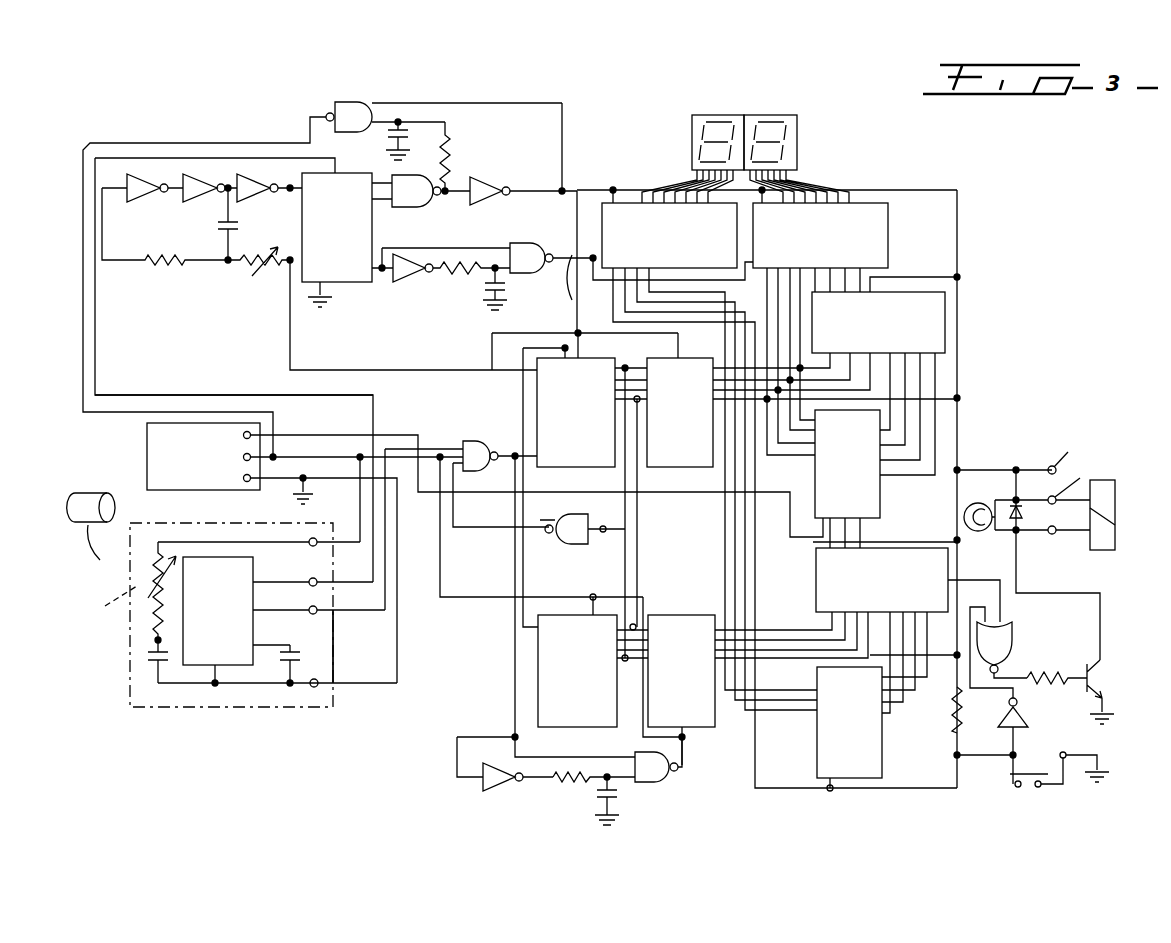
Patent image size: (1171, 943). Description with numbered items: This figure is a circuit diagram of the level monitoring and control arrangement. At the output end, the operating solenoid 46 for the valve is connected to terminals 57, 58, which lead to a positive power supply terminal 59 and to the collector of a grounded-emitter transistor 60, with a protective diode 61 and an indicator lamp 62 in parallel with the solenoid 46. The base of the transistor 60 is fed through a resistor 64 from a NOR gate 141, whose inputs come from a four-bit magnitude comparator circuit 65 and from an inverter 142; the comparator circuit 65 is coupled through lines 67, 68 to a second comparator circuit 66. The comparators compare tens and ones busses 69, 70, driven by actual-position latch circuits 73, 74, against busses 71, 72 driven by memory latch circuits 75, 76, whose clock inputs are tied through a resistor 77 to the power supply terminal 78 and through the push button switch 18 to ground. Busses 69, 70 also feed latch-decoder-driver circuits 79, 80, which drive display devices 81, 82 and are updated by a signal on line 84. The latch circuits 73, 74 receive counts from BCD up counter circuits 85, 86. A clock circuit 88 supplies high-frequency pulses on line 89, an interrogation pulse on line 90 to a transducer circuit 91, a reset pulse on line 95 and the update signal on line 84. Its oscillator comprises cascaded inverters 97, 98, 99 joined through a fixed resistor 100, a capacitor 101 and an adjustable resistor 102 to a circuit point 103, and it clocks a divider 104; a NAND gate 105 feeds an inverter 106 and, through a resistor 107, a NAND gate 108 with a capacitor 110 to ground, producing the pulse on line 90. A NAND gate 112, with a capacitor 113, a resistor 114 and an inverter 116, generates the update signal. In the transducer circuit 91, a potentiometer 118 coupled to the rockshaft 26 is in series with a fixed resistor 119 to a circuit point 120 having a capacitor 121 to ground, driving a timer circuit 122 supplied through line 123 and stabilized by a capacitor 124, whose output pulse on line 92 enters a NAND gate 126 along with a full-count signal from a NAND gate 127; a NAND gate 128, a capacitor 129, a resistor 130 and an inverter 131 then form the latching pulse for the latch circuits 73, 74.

The push button switch 18 is at (1033, 770).
The rockshaft 26 is at (85, 526).
The operating solenoid 46 is at (1112, 550).
The terminal 57 is at (1080, 484).
The terminal 58 is at (1052, 536).
The positive power supply terminal 59 is at (1063, 462).
The transistor 60 is at (1100, 676).
The protective diode 61 is at (1022, 516).
The indicator lamp 62 is at (966, 510).
The resistor 64 is at (1044, 678).
The 4-bit magnitude comparator circuit 65 is at (948, 566).
The second 4-bit magnitude comparator circuit 66 is at (945, 325).
The line 67 is at (940, 420).
The line 68 is at (930, 447).
The tens bus 69 is at (780, 635).
The ones bus 70 is at (846, 375).
The bus 71 is at (882, 655).
The bus 72 is at (908, 386).
The quad clocked D latch circuit 73 is at (705, 727).
The quad clocked D latch circuit 74 is at (692, 467).
The quad clocked D latch circuit 75 is at (882, 757).
The quad clocked D latch circuit 76 is at (882, 470).
The resistor 77 is at (960, 717).
The power supply terminal 78 is at (258, 462).
The BCD-to-7 segment latch-decoder-driver circuit 79 is at (608, 203).
The BCD-to-7 segment latch-decoder-driver circuit 80 is at (870, 203).
The display device 81 is at (692, 140).
The display device 82 is at (797, 135).
The line 84 is at (587, 284).
The four stage BCD up counter circuit 85 is at (585, 727).
The four stage BCD up counter circuit 86 is at (572, 467).
The clock circuit 88 is at (590, 113).
The line 89 is at (385, 370).
The line 90 is at (373, 415).
The transducer circuit 91 is at (343, 714).
The line 92 is at (336, 615).
The line 95 is at (470, 103).
The inverter 97 is at (143, 202).
The inverter 98 is at (197, 202).
The inverter 99 is at (258, 202).
The fixed resistor 100 is at (165, 265).
The capacitor 101 is at (210, 250).
The adjustable resistor 102 is at (276, 262).
The circuit point 103 is at (228, 265).
The divider 104 is at (355, 282).
The NAND gate 105 is at (418, 212).
The inverter 106 is at (488, 205).
The resistor 107 is at (452, 162).
The NAND gate 108 is at (358, 102).
The capacitor 110 is at (388, 142).
The NAND gate 112 is at (520, 273).
The capacitor 113 is at (505, 305).
The resistor 114 is at (462, 275).
The inverter 116 is at (412, 278).
The potentiometer 118 is at (158, 548).
The fixed resistor 119 is at (155, 625).
The circuit point 120 is at (148, 656).
The capacitor 121 is at (170, 683).
The timer circuit 122 is at (253, 582).
The line 123 is at (308, 492).
The capacitor 124 is at (293, 652).
The NAND gate 126 is at (478, 443).
The NAND gate 127 is at (588, 522).
The NAND gate 128 is at (660, 782).
The capacitor 129 is at (614, 812).
The resistor 130 is at (570, 785).
The inverter 131 is at (500, 788).
The NOR gate 141 is at (1012, 636).
The inverter 142 is at (1025, 720).